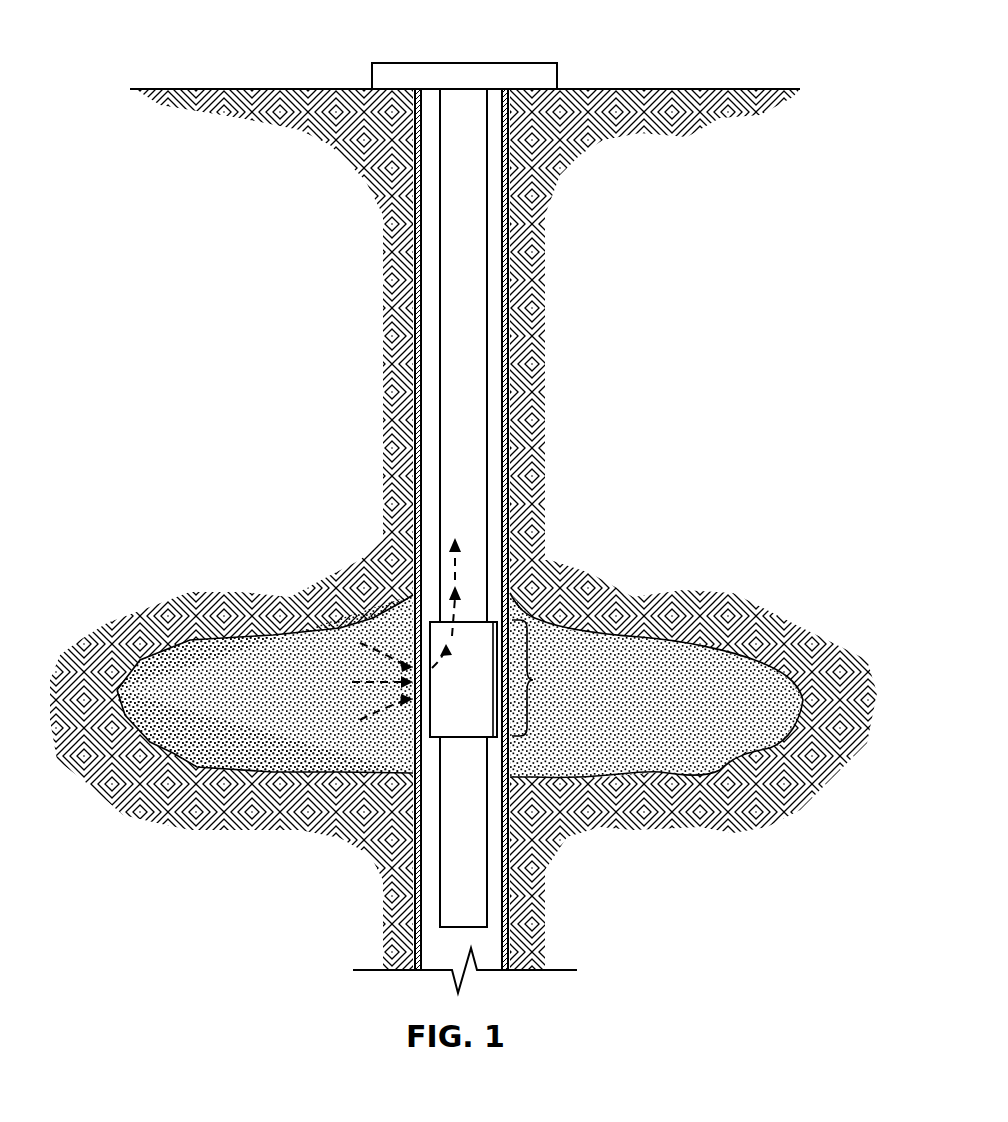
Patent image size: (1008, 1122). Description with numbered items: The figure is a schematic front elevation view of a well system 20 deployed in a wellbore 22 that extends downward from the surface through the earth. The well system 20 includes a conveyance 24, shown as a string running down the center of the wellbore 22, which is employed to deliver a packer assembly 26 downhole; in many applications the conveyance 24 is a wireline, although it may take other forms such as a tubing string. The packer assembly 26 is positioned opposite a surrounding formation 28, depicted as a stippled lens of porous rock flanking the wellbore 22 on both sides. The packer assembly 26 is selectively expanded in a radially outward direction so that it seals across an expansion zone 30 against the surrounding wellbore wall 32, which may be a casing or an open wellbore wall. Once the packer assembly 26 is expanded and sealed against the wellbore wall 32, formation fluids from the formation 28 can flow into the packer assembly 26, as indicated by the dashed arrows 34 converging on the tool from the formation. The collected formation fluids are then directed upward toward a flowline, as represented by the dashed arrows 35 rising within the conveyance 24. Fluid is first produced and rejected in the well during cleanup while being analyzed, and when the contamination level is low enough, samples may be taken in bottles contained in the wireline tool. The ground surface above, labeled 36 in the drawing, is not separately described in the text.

The well system 20 is at (394, 62).
The wellbore 22 is at (441, 281).
The conveyance 24 is at (487, 414).
The packer assembly 26 is at (430, 708).
The formation 28 is at (731, 721).
The expansion zone 30 is at (542, 678).
The wellbore wall 32 is at (502, 850).
The arrows 34 is at (372, 686).
The arrows 35 is at (455, 605).
The earth surface 36 is at (657, 88).